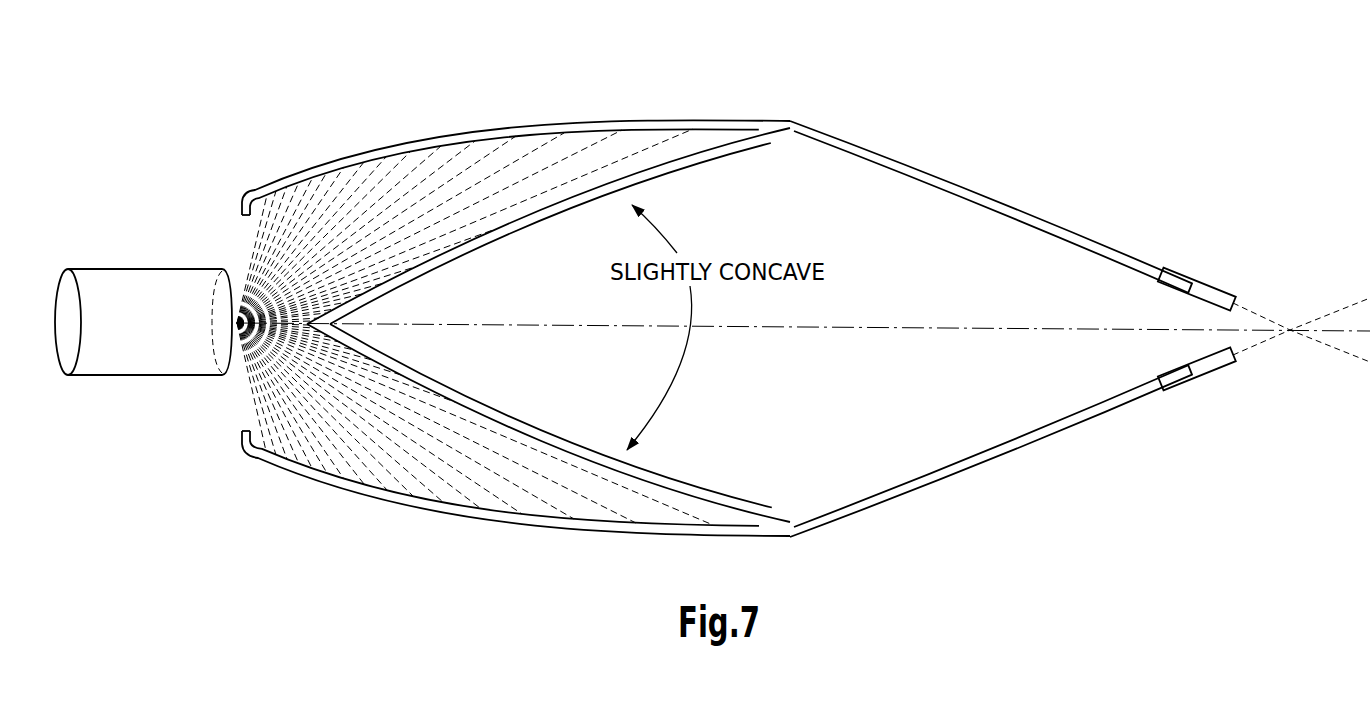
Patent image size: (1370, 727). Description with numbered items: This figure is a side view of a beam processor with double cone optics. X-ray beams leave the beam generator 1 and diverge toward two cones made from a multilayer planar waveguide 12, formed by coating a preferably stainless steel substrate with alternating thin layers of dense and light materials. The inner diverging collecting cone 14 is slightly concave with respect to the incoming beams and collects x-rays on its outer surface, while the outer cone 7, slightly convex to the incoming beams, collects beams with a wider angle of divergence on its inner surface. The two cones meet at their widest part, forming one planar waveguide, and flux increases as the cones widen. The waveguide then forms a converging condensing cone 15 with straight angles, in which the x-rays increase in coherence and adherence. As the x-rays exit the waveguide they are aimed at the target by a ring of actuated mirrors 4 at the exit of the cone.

The beam generator 1 is at (143, 322).
The actuated mirrors 4 is at (1233, 347).
The outer cone 7 is at (357, 152).
The multilayer planar waveguide 12 is at (866, 145).
The collecting cone 14 is at (548, 325).
The condensing cone 15 is at (991, 329).